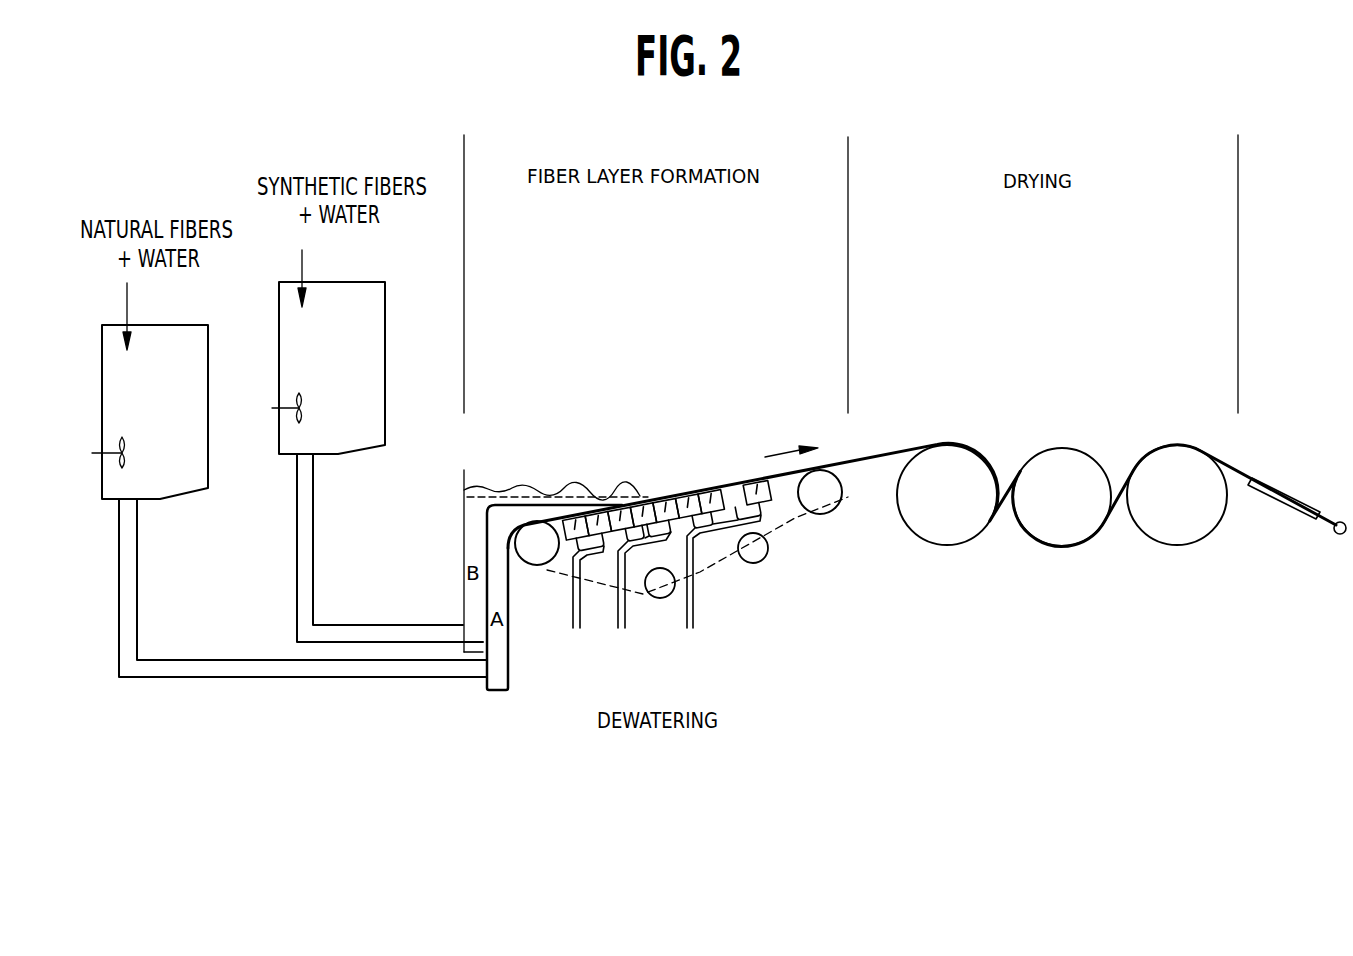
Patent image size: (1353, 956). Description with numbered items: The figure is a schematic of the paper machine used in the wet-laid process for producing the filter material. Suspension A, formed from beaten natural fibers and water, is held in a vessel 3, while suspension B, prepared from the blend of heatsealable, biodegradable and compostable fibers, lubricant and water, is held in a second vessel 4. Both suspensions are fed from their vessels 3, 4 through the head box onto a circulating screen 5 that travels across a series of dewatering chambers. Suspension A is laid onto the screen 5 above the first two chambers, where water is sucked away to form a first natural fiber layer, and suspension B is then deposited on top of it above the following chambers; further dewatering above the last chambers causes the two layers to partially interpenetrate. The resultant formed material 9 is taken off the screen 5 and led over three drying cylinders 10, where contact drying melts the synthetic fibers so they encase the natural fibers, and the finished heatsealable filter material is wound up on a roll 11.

The vessel 3 is at (180, 487).
The vessel 4 is at (378, 398).
The circulating screen 5 is at (597, 510).
The formed material 9 is at (878, 452).
The drying cylinders 10 is at (1175, 538).
The roll 11 is at (1338, 548).